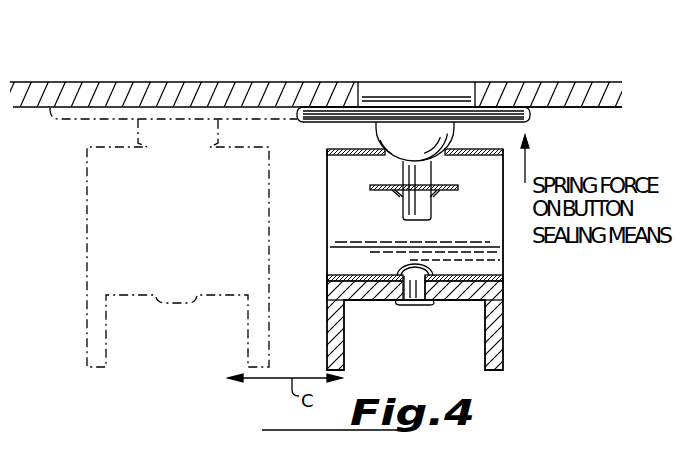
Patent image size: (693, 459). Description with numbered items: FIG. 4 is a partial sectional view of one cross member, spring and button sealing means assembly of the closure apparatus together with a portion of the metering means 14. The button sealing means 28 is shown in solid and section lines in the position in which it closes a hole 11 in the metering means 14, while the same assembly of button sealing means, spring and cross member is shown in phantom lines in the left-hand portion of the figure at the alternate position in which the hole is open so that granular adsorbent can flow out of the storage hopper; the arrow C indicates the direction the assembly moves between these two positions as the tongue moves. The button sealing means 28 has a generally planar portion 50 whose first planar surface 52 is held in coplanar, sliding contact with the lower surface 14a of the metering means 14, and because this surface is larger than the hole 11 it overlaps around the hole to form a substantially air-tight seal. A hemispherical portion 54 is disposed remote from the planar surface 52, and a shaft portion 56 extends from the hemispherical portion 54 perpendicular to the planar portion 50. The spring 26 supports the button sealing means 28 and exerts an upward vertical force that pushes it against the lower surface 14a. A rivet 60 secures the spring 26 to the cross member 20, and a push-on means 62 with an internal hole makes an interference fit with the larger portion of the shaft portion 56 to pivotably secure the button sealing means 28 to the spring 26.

The hole 11 is at (381, 88).
The metering means 14 is at (578, 88).
The bottom surface of the metering means 14a is at (565, 107).
The cross member 20 is at (497, 341).
The spring 26 is at (498, 238).
The button sealing means 28 is at (377, 132).
The planar portion 50 is at (500, 118).
The first planar surface 52 is at (427, 108).
The hemispherical portion 54 is at (455, 133).
The shaft portion 56 is at (398, 173).
The rivet 60 is at (412, 303).
The means for securing the button sealing means to the spring 62 is at (450, 190).